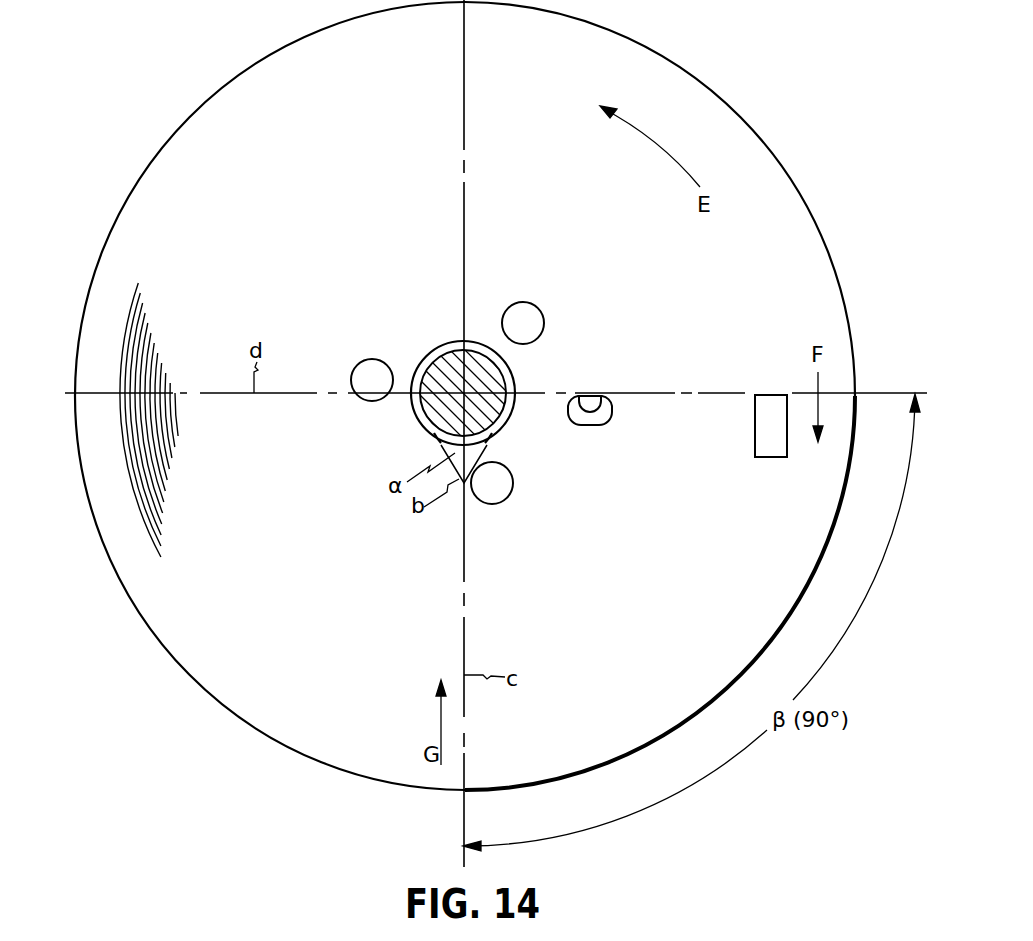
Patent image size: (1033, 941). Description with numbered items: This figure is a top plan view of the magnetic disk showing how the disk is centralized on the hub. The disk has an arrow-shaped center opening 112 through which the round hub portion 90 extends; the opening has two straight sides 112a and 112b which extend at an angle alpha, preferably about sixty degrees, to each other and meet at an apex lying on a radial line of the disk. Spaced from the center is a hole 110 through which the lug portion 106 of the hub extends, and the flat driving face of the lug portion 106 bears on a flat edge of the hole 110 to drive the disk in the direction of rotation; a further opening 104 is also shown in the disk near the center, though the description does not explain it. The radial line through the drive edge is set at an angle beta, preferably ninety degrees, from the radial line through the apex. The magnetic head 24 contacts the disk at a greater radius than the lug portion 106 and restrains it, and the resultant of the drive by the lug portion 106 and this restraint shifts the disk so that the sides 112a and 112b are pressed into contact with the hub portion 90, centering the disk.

The magnetic head 24 is at (771, 457).
The hub portion 90 is at (432, 373).
The hole 104 is at (525, 300).
The lug portion 106 is at (590, 398).
The hole 110 is at (590, 425).
The center opening 112 is at (450, 345).
The straight side 112a is at (440, 437).
The straight side 112b is at (492, 437).